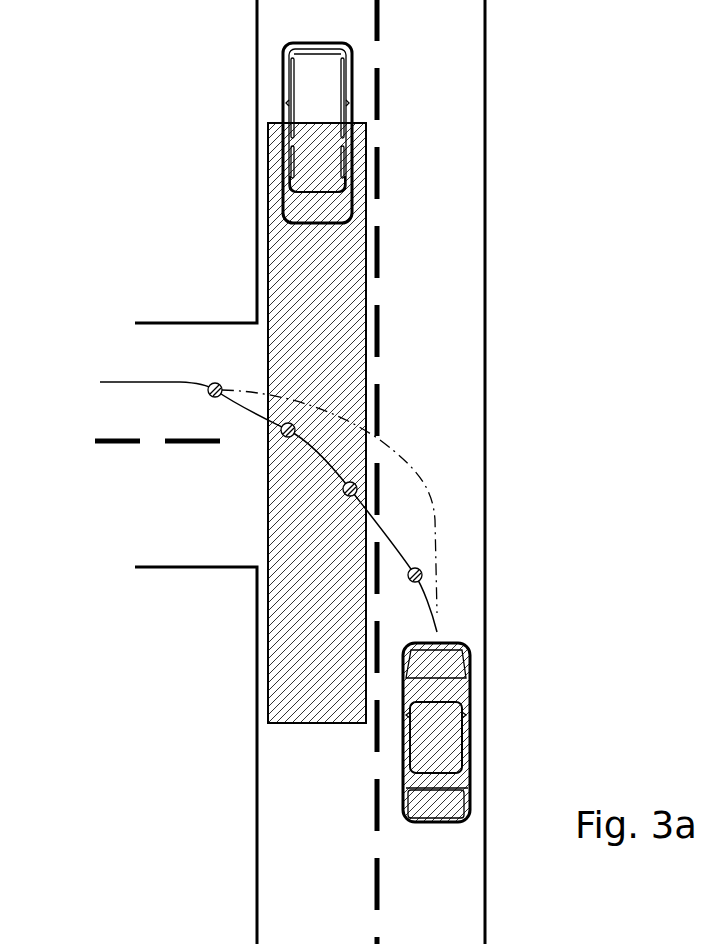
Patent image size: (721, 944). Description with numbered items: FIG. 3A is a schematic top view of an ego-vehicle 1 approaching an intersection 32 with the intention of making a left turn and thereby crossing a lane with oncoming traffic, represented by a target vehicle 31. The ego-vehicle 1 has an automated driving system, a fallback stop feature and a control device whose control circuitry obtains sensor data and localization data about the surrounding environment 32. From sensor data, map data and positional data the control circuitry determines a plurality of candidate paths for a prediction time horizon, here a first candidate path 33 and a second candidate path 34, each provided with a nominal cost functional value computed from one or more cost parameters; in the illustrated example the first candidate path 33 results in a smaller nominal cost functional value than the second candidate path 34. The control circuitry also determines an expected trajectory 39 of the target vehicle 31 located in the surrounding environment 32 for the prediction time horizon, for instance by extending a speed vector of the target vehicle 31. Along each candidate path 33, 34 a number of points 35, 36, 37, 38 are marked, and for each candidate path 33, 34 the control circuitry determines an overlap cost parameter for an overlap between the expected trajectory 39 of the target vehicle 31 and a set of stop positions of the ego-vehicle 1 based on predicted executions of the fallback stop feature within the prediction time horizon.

The ego-vehicle 1 is at (470, 720).
The target vehicle 31 is at (352, 60).
The intersection 32 is at (504, 152).
The first candidate path 33 is at (436, 598).
The second candidate path 34 is at (428, 495).
The trajectory point 35 is at (422, 573).
The trajectory point 36 is at (357, 487).
The trajectory point 37 is at (283, 436).
The trajectory point 38 is at (218, 383).
The expected trajectory 39 is at (285, 673).